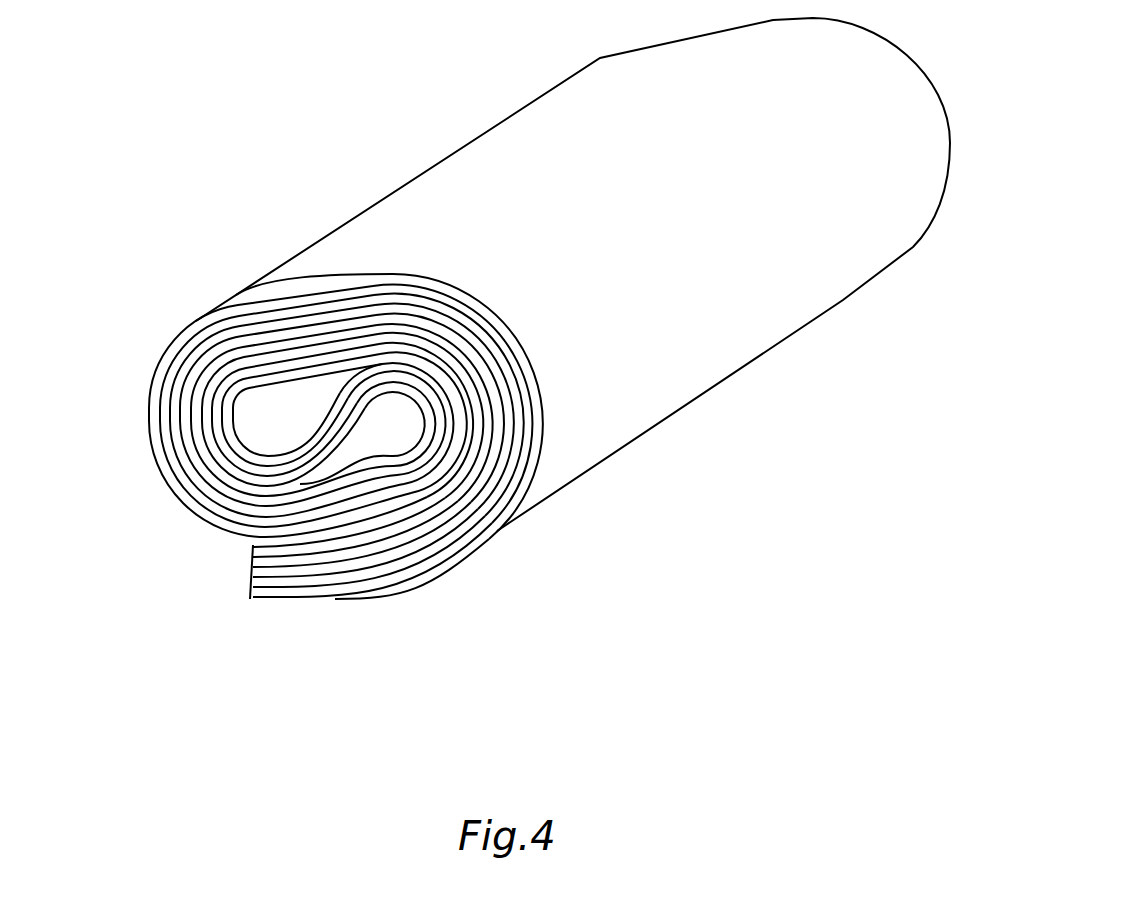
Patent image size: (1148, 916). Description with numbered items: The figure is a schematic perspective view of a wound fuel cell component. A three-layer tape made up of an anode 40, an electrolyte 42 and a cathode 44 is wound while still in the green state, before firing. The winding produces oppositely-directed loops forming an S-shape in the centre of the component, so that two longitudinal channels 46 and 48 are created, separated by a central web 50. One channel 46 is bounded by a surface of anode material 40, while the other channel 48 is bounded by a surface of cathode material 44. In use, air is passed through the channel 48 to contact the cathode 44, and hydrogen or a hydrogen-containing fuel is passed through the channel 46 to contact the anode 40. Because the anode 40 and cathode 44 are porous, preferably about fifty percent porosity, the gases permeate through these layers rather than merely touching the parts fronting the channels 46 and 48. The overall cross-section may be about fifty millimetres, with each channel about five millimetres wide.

The anode 40 is at (252, 578).
The electrolyte 42 is at (250, 588).
The cathode 44 is at (250, 598).
The longitudinal channel 46 is at (257, 410).
The longitudinal channel 48 is at (398, 440).
The central web 50 is at (353, 444).